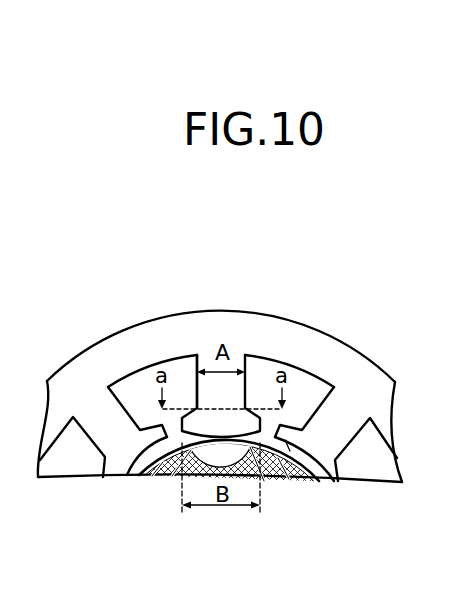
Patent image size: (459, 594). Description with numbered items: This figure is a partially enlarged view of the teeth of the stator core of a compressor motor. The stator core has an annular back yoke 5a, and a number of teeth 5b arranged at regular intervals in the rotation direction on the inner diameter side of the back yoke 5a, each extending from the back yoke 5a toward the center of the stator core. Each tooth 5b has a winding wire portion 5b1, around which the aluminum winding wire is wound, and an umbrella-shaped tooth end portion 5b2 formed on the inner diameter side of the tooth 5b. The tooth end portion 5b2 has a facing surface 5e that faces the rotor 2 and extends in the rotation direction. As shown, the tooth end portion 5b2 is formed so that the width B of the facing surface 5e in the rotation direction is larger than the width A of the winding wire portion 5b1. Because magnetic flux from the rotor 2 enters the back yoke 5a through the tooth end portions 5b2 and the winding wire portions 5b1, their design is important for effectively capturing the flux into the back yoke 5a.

The rotor 2 is at (320, 479).
The back yoke 5a is at (320, 357).
The tooth 5b is at (222, 395).
The winding wire portion 5b1 is at (200, 395).
The tooth end portion 5b2 is at (150, 440).
The facing surface 5e is at (262, 482).